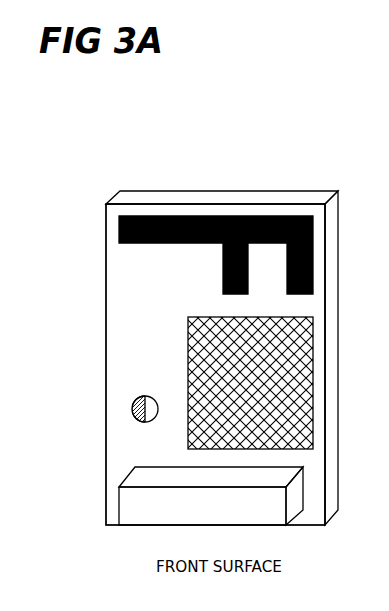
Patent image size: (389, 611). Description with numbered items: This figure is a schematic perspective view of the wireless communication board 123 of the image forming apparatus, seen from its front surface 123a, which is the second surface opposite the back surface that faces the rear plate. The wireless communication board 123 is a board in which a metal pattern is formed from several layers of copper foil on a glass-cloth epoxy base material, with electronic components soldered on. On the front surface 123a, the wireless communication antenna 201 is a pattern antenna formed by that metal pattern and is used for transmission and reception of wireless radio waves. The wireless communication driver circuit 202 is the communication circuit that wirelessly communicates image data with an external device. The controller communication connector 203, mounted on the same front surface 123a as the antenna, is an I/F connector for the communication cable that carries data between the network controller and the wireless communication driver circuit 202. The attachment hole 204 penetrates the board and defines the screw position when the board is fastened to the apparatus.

The wireless communication board 123 is at (262, 198).
The front surface 123a is at (132, 292).
The wireless communication antenna 201 is at (157, 215).
The wireless communication driver circuit 202 is at (188, 337).
The controller communication connector 203 is at (118, 500).
The attachment hole 204 is at (133, 401).